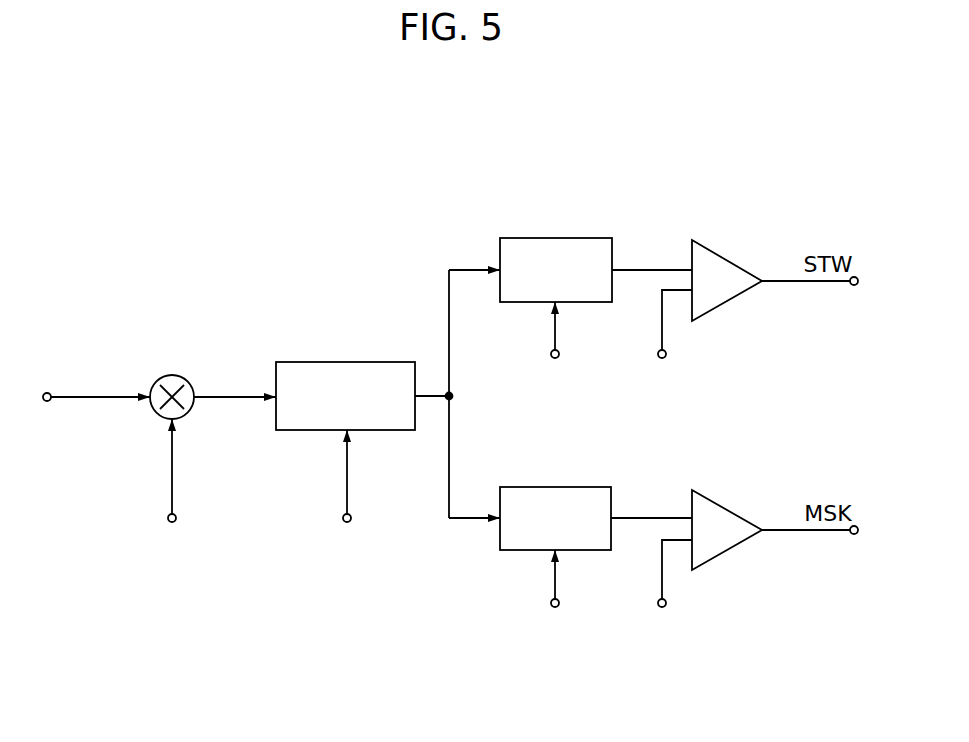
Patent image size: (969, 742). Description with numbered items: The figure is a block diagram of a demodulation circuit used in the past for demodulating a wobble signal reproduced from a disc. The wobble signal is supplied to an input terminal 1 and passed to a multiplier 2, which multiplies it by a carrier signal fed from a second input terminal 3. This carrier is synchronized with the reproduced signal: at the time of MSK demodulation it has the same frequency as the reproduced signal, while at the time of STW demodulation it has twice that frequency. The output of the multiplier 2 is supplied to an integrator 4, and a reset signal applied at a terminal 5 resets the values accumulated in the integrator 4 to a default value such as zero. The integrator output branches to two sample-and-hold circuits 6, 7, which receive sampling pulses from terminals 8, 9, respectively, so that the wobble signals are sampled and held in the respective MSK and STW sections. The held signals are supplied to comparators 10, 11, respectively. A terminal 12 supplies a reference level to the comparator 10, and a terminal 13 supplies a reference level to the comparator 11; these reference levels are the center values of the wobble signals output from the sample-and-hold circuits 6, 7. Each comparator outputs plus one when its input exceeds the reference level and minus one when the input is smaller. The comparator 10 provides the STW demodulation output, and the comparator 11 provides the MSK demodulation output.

The input terminal 1 is at (47, 392).
The multiplier 2 is at (172, 375).
The input terminal 3 is at (172, 522).
The integrator 4 is at (362, 362).
The terminal 5 is at (347, 522).
The sample-and-hold circuit 6 is at (570, 238).
The sample-and-hold circuit 7 is at (570, 487).
The terminal 8 is at (555, 358).
The terminal 9 is at (555, 607).
The comparator 10 is at (722, 255).
The comparator 11 is at (721, 505).
The terminal 12 is at (662, 358).
The terminal 13 is at (662, 607).